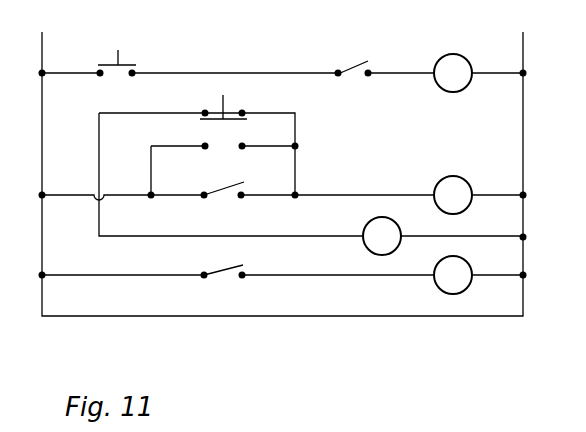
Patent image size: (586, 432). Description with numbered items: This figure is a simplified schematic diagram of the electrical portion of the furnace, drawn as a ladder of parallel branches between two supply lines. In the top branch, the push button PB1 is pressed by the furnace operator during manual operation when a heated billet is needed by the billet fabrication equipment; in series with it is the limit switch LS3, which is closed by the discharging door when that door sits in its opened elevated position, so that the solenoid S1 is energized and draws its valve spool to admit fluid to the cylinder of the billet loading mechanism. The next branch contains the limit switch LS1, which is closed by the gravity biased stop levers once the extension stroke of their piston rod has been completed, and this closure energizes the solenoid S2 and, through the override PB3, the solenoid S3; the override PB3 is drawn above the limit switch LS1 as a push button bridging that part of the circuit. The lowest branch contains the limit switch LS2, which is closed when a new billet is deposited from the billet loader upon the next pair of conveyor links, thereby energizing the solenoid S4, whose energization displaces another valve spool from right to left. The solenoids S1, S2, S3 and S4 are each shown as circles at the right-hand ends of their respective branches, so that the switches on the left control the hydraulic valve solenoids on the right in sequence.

The push button PB1 is at (119, 53).
The override PB3 is at (239, 115).
The limit switch LS1 is at (223, 205).
The limit switch LS2 is at (223, 286).
The limit switch LS3 is at (354, 56).
The solenoid S1 is at (453, 73).
The solenoid S2 is at (453, 195).
The solenoid S3 is at (382, 236).
The solenoid S4 is at (453, 275).